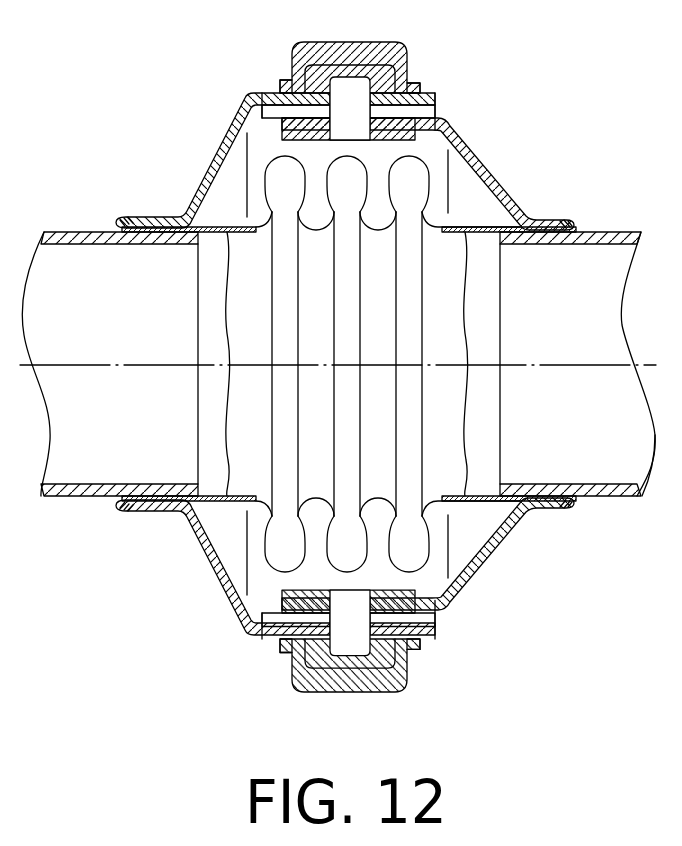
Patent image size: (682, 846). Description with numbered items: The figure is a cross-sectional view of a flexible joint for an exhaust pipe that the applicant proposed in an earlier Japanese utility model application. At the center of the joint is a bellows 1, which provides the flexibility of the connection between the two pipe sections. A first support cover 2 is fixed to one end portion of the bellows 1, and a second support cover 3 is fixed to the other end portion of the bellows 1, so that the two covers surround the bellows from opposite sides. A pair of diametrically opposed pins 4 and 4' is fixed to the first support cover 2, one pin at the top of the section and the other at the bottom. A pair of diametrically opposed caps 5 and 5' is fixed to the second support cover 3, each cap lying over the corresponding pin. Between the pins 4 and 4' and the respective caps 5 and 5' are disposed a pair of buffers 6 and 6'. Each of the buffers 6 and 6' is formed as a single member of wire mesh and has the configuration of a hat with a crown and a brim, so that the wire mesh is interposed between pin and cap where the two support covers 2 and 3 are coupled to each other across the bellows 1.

The bellows 1 is at (416, 174).
The first support cover 2 is at (509, 187).
The second support cover 3 is at (203, 172).
The pin 4 is at (347, 175).
The pin 4' is at (347, 553).
The cap 5 is at (348, 70).
The cap 5' is at (335, 654).
The buffer 6 is at (337, 87).
The buffer 6' is at (357, 653).